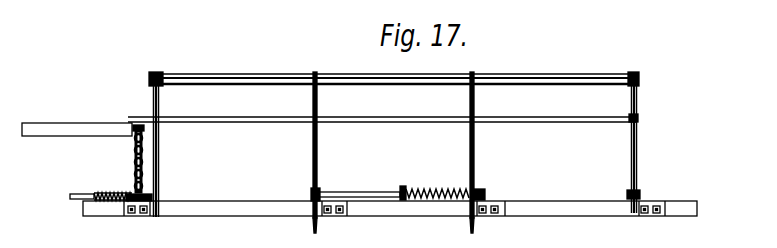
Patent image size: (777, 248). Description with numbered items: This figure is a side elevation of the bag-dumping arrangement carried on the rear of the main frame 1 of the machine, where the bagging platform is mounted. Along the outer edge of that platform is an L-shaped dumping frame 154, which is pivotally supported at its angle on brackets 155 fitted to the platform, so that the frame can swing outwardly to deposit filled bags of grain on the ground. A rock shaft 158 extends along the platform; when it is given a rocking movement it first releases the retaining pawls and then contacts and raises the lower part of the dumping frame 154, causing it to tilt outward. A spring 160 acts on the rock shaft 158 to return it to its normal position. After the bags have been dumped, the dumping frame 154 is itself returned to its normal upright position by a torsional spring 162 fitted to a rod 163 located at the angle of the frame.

The main frame 1 is at (683, 207).
The L-shaped dumping frame 154 is at (160, 174).
The brackets 155 is at (134, 214).
The shaft 158 is at (80, 193).
The spring 160 is at (112, 193).
The torsional spring 162 is at (435, 189).
The rod 163 is at (366, 192).